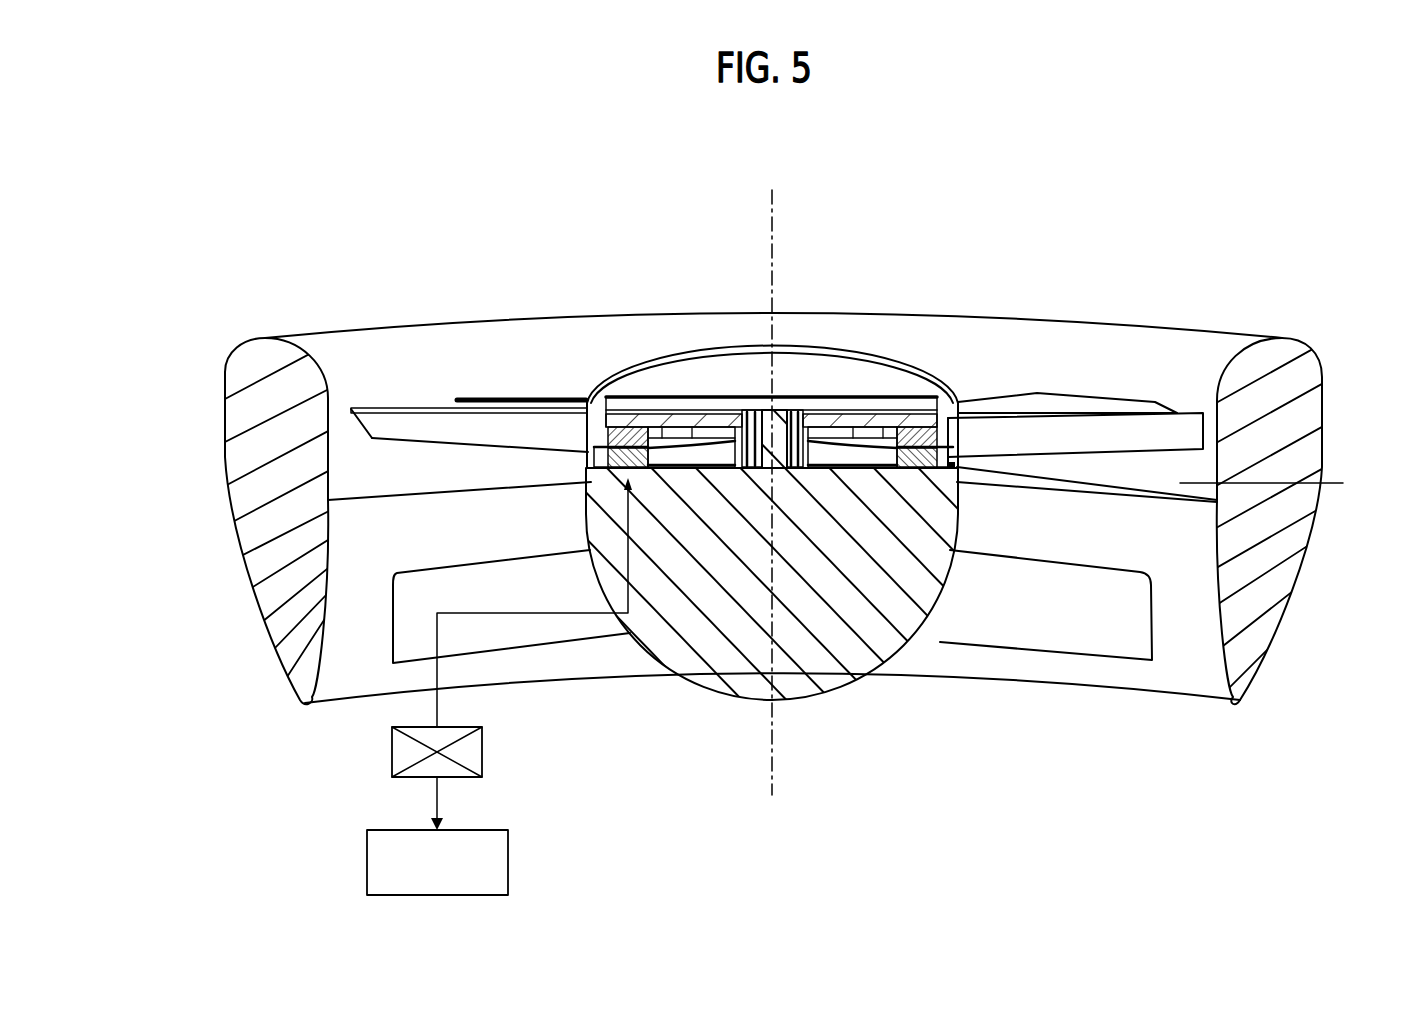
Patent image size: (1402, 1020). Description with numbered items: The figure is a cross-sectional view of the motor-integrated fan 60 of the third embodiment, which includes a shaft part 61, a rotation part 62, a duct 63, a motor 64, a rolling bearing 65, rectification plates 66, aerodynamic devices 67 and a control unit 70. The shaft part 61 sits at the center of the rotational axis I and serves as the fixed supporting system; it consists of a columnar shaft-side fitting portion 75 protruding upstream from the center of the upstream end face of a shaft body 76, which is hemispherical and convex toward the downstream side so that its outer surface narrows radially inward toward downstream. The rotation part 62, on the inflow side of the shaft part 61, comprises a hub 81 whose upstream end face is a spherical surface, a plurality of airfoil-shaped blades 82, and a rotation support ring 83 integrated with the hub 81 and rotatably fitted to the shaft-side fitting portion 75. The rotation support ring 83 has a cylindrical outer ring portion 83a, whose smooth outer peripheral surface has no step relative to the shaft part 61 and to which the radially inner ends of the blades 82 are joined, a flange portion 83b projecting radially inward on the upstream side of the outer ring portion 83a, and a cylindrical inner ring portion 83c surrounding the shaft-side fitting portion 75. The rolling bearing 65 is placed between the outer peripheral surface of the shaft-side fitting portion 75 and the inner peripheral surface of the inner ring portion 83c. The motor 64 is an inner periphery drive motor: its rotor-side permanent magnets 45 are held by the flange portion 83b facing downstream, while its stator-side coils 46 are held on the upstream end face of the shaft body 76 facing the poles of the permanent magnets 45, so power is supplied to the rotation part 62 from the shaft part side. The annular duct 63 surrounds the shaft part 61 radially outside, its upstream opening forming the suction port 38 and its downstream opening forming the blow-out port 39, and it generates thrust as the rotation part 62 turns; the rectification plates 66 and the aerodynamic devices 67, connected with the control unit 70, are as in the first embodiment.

The suction port 38 is at (741, 513).
The blow-out port 39 is at (1127, 702).
The permanent magnets 45 is at (930, 426).
The coils 46 is at (1277, 483).
The motor-integrated fan 60 is at (785, 296).
The shaft part 61 is at (651, 664).
The rotation part 62 is at (633, 357).
The duct 63 is at (309, 331).
The motor 64 is at (953, 446).
The rolling bearing 65 is at (818, 445).
The rectification plates 66 is at (1071, 620).
The aerodynamic devices 67 is at (464, 823).
The control unit 70 is at (458, 722).
The shaft-side fitting portion 75 is at (763, 432).
The shaft body 76 is at (884, 636).
The hub 81 is at (683, 346).
The blades 82 is at (491, 416).
The rotation support ring 83 is at (558, 405).
The outer ring portion 83a is at (604, 432).
The flange portion 83b is at (914, 420).
The inner ring portion 83c is at (832, 428).
The rotational axis I is at (775, 196).